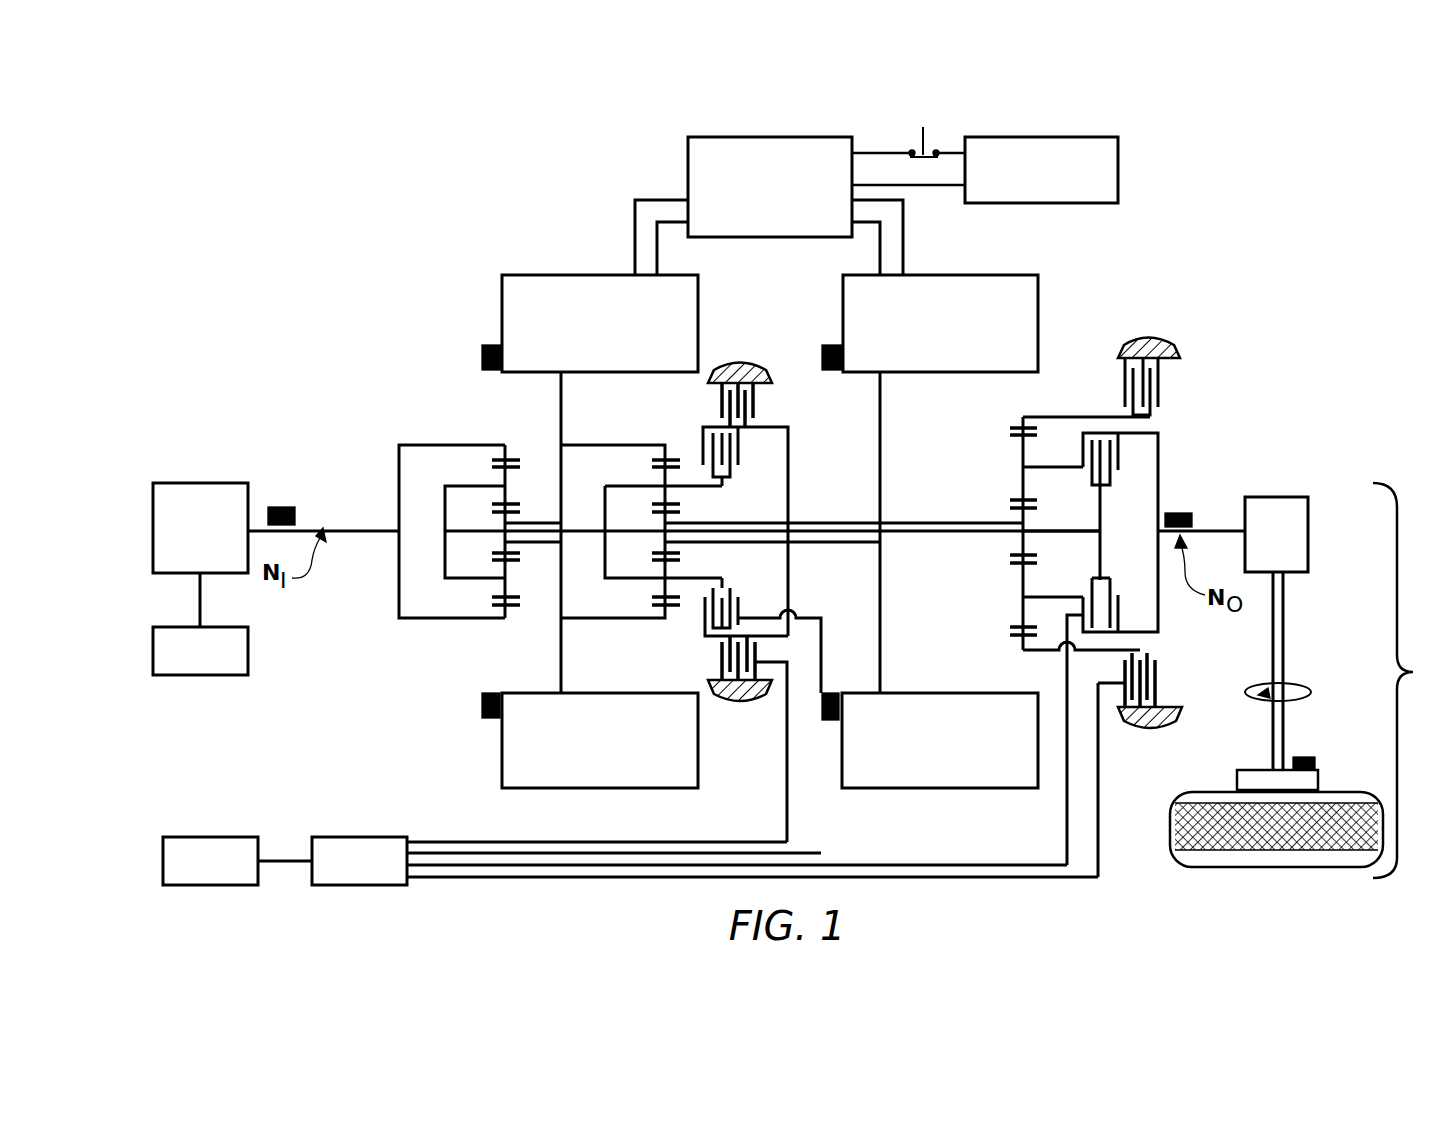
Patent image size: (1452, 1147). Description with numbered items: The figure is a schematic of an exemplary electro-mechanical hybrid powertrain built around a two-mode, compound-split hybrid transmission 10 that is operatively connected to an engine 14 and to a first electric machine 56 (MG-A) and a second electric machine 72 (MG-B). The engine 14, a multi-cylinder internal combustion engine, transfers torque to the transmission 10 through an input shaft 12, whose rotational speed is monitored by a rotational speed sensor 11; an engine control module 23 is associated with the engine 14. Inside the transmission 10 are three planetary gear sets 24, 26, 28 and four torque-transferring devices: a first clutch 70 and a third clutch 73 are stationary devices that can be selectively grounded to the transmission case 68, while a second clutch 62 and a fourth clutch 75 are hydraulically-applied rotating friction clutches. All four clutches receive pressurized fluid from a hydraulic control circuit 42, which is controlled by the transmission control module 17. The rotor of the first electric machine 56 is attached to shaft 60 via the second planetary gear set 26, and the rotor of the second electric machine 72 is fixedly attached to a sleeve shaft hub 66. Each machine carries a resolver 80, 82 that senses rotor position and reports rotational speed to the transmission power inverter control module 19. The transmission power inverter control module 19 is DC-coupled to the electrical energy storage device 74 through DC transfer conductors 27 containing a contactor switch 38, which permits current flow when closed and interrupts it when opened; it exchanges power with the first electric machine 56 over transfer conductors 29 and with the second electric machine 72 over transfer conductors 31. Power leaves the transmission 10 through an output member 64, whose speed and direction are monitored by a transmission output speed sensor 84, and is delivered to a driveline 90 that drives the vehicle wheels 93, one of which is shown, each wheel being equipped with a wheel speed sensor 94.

The electro-mechanical hybrid transmission 10 is at (458, 238).
The rotational speed sensor 11 is at (280, 506).
The input shaft 12 is at (360, 528).
The engine 14 is at (200, 482).
The transmission control module 17 is at (205, 836).
The transmission power inverter control module 19 is at (687, 153).
The engine control module 23 is at (248, 667).
The first planetary gear set 24 is at (495, 438).
The second planetary gear set 26 is at (660, 438).
The DC transfer conductors 27 is at (868, 151).
The third planetary gear set 28 is at (1018, 413).
The transfer conductors 29 is at (634, 212).
The transfer conductors 31 is at (904, 228).
The contactor switch 38 is at (926, 138).
The hydraulic control circuit 42 is at (330, 836).
The first electric machine 56 is at (501, 305).
The shaft 60 is at (1075, 530).
The clutch C2 62 is at (1125, 468).
The output member 64 is at (1213, 530).
The sleeve shaft hub 66 is at (916, 521).
The transmission case 68 is at (742, 360).
The clutch C1 70 is at (1110, 378).
The second electric machine 72 is at (1039, 292).
The clutch C3 73 is at (760, 404).
The electrical energy storage device 74 is at (1119, 160).
The clutch C4 75 is at (752, 456).
The resolver 80 is at (481, 357).
The resolver 82 is at (832, 344).
The transmission output speed sensor 84 is at (1180, 512).
The driveline 90 is at (1303, 680).
The vehicle wheel 93 is at (1236, 779).
The wheel speed sensor 94 is at (1305, 756).